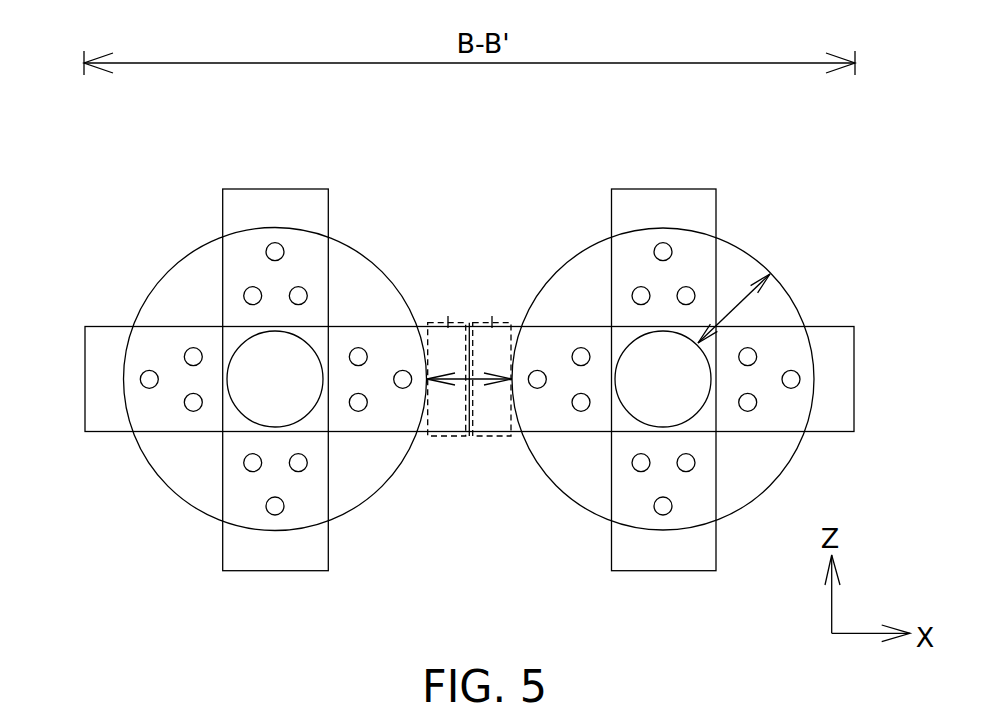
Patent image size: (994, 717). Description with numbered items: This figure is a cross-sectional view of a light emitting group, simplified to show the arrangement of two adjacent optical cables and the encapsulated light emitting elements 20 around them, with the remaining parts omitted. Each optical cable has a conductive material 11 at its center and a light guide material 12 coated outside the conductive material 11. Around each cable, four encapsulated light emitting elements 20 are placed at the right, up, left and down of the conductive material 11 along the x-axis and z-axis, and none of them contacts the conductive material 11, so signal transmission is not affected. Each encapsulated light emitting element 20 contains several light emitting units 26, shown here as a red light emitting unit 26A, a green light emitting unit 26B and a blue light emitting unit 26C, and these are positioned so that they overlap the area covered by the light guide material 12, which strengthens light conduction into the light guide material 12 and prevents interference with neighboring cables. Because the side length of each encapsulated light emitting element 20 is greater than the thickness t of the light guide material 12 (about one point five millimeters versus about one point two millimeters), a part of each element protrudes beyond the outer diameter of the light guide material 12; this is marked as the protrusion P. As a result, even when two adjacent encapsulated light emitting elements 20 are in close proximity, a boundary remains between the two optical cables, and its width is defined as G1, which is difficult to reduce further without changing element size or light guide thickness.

The conductive material 11 is at (260, 395).
The light guide material 12 is at (162, 302).
The encapsulated light emitting element 20 is at (274, 555).
The light emitting unit 26 is at (470, 292).
The red light emitting unit 26A is at (275, 243).
The green light emitting unit 26B is at (252, 286).
The blue light emitting unit 26C is at (323, 217).
The protrusion P is at (450, 348).
The boundary width G1 is at (469, 395).
The thickness of the light guide material t is at (734, 308).